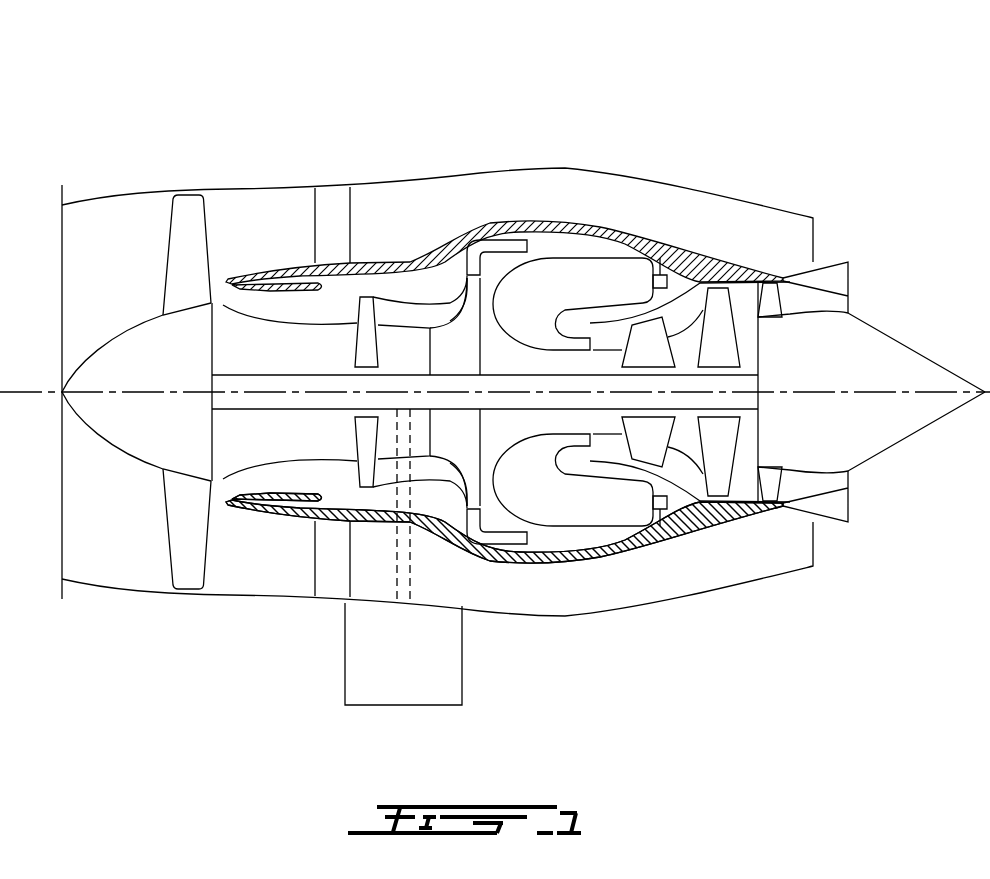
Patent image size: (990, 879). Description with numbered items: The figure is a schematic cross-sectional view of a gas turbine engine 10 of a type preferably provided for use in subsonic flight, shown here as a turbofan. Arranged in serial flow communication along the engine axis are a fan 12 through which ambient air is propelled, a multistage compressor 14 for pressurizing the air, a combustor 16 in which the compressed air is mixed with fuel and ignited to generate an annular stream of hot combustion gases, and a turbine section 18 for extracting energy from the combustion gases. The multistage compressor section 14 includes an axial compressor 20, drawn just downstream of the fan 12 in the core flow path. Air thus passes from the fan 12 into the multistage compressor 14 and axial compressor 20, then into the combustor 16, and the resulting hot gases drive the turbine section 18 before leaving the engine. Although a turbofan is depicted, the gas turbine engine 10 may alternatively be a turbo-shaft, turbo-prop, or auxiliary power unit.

The gas turbine engine 10 is at (703, 125).
The fan 12 is at (183, 518).
The multistage compressor 14 is at (413, 317).
The combustor 16 is at (575, 276).
The turbine section 18 is at (685, 447).
The axial compressor 20 is at (366, 288).